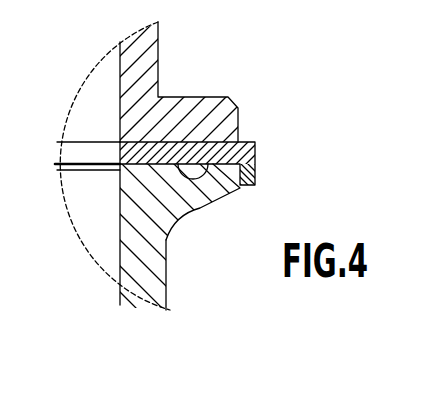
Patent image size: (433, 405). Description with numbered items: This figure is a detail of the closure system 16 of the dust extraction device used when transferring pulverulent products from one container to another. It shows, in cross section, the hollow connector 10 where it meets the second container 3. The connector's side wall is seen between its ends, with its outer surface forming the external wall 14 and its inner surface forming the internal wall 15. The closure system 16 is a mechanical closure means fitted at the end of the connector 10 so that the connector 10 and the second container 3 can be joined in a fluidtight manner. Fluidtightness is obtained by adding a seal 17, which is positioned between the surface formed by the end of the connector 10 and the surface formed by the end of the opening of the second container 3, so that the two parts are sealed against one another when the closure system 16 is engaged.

The hollow connector 10 is at (206, 88).
The seal 17 is at (256, 152).
The closure system 16 is at (346, 170).
The second container 3 is at (203, 224).
The external wall 14 is at (167, 243).
The internal wall 15 is at (119, 237).